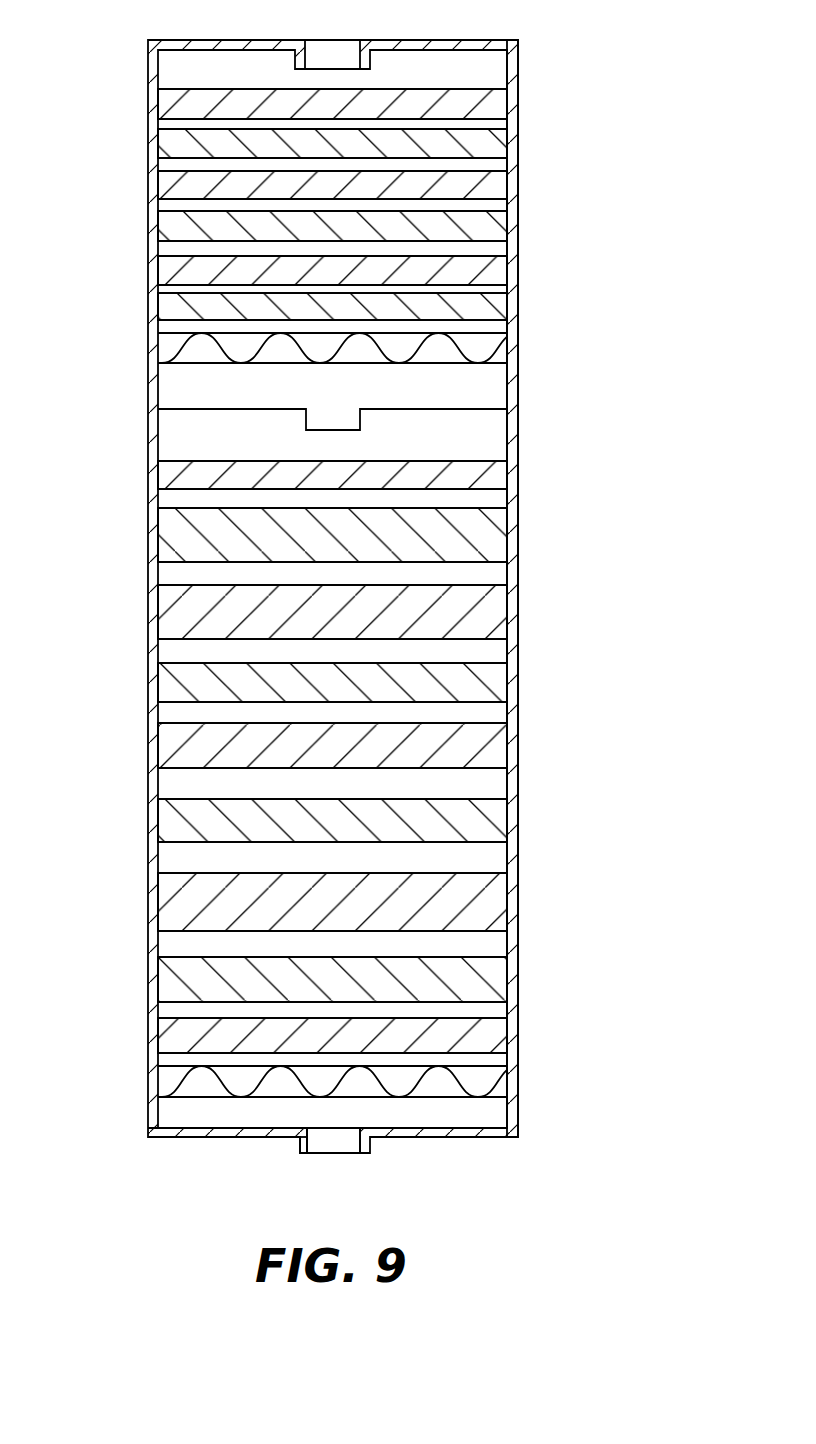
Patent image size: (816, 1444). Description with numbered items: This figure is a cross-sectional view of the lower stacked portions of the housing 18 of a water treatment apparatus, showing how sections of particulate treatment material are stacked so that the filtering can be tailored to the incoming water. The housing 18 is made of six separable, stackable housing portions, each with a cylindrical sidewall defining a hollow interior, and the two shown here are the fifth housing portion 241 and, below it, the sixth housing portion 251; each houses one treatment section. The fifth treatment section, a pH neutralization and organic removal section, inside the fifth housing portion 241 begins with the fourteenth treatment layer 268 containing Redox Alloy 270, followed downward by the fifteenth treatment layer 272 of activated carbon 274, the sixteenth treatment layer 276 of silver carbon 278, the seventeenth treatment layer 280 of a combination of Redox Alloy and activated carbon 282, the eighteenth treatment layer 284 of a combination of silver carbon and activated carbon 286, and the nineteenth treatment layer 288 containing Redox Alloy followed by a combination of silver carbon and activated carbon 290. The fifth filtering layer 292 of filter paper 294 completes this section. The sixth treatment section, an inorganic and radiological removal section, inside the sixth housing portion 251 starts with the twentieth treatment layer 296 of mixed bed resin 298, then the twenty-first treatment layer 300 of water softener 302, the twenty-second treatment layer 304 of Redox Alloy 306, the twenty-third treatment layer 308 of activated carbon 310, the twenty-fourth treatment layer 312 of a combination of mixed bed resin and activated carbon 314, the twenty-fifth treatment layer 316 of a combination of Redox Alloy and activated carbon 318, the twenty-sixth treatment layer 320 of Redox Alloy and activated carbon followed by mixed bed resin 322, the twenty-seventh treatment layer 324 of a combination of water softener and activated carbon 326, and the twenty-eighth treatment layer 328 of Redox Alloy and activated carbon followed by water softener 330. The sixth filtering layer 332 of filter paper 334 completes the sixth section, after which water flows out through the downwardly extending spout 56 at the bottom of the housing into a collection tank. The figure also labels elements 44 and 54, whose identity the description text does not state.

The housing 18 is at (654, 108).
The fifth housing portion 241 is at (526, 69).
The sixth housing portion 251 is at (527, 424).
The housing bottom wall 44 is at (469, 1147).
The terminal tab wall 54 is at (290, 1150).
The downwardly extending spout 56 is at (316, 1145).
The fourteenth treatment layer 268 is at (150, 98).
The Redox Alloy 270 is at (158, 112).
The fifteenth treatment layer 272 is at (515, 139).
The activated carbon 274 is at (507, 147).
The sixteenth treatment layer 276 is at (150, 183).
The silver carbon 278 is at (158, 193).
The seventeenth treatment layer 280 is at (515, 220).
The combination of Redox Alloy and activated carbon 282 is at (507, 232).
The eighteenth treatment layer 284 is at (150, 267).
The combination of silver carbon and activated carbon 286 is at (158, 277).
The nineteenth treatment layer 288 is at (515, 303).
The Redox Alloy followed by a combination of silver carbon and activated carbon 290 is at (507, 315).
The fifth filtering layer 292 is at (150, 343).
The filter paper 294 is at (158, 352).
The twentieth treatment layer 296 is at (515, 467).
The mixed bed resin 298 is at (507, 480).
The twenty-first treatment layer 300 is at (150, 530).
The water softener 302 is at (158, 542).
The twenty-second treatment layer 304 is at (515, 607).
The Redox Alloy 306 is at (507, 622).
The twenty-third treatment layer 308 is at (150, 680).
The activated carbon 310 is at (158, 690).
The twenty-fourth treatment layer 312 is at (515, 735).
The combination of mixed bed resin and activated carbon 314 is at (507, 745).
The twenty-fifth treatment layer 316 is at (150, 815).
The combination of Redox Alloy and activated carbon 318 is at (158, 827).
The twenty-sixth treatment layer 320 is at (515, 895).
The combination of Redox Alloy and activated carbon followed by mixed bed resin 322 is at (507, 908).
The twenty-seventh treatment layer 324 is at (150, 972).
The combination of water softener and activated carbon 326 is at (158, 985).
The twenty-eighth treatment layer 328 is at (515, 1030).
The combination of Redox Alloy and activated carbon followed by water softener 330 is at (507, 1040).
The sixth filtering layer 332 is at (150, 1075).
The filter paper 334 is at (158, 1087).